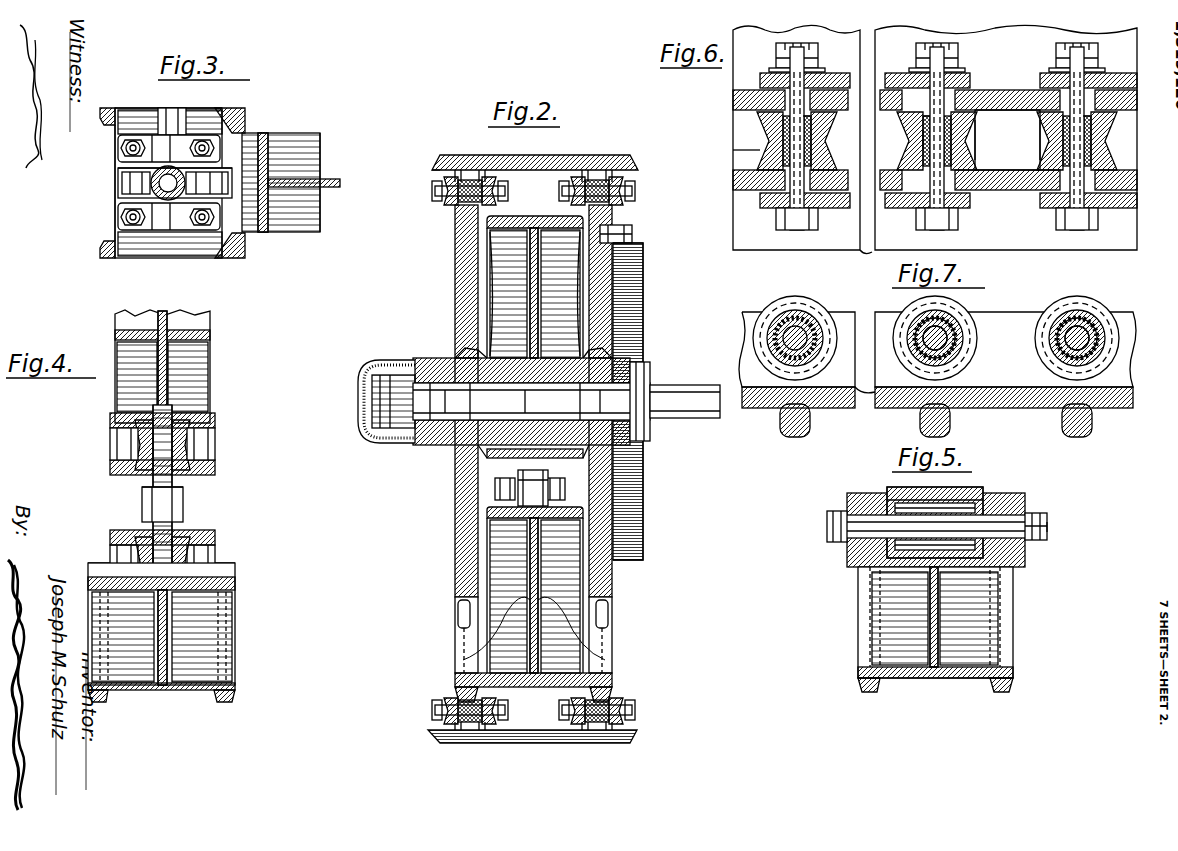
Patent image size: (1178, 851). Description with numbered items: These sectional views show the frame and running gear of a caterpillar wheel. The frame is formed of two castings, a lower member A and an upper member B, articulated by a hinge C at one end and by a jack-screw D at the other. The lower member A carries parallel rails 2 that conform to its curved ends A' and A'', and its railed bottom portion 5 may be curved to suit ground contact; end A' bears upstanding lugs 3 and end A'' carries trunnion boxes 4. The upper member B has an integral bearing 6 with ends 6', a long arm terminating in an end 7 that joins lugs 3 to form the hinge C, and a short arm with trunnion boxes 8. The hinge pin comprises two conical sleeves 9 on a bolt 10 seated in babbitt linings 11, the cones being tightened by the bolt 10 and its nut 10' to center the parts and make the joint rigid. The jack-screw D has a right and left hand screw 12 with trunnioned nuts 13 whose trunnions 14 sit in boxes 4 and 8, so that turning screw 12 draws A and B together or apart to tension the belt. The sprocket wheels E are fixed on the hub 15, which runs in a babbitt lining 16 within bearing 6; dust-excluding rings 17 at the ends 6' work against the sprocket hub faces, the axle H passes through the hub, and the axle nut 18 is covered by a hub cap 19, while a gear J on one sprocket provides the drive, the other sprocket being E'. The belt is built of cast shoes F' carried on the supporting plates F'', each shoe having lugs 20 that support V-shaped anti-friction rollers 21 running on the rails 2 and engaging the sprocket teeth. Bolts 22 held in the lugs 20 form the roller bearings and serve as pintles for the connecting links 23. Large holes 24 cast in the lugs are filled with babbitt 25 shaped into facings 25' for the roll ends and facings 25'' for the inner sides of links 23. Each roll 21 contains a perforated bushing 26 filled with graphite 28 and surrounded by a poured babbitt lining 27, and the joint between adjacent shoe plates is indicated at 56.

In FIG. 3, the parallel rails 2 is at (102, 116).
In FIG. 4, the parallel rails 2 is at (100, 702).
In FIG. 2, the parallel rails 2 is at (455, 684).
In FIG. 5, the parallel rails 2 is at (872, 692).
In FIG. 5, the upstanding ears or lugs 3 is at (866, 494).
In FIG. 4, the trunnion boxes 4 is at (112, 538).
In FIG. 4, the bottom or railed portion 5 is at (180, 690).
In FIG. 2, the bottom or railed portion 5 is at (545, 687).
In FIG. 5, the bottom or railed portion 5 is at (952, 678).
In FIG. 4, the integral bearing 6 is at (161, 438).
In FIG. 2, the integral bearing 6 is at (521, 386).
In FIG. 2, the bearing ends 6' is at (540, 340).
In FIG. 5, the end of long arm 7 is at (906, 498).
In FIG. 3, the trunnion boxes 8 is at (214, 160).
In FIG. 5, the conical sleeves 9 is at (836, 511).
In FIG. 5, the bolt 10 is at (914, 526).
In FIG. 5, the nut 10' is at (1062, 532).
In FIG. 5, the cast metal linings 11 is at (956, 500).
In FIG. 3, the right and left hand screw 12 is at (150, 181).
In FIG. 4, the right and left hand screw 12 is at (184, 508).
In FIG. 4, the trunnioned nuts or sleeves 13 is at (172, 418).
In FIG. 3, the trunnions 14 is at (172, 133).
In FIG. 4, the trunnions 14 is at (112, 450).
In FIG. 2, the hub 15 is at (518, 350).
In FIG. 2, the cast metal lining 16 is at (540, 345).
In FIG. 2, the dust-excluding rings 17 is at (460, 448).
In FIG. 2, the axle nut 18 is at (395, 375).
In FIG. 2, the hub cap 19 is at (370, 370).
In FIG. 2, the integral lugs 20 is at (458, 172).
In FIG. 6, the integral lugs 20 is at (733, 93).
In FIG. 7, the integral lugs 20 is at (937, 404).
In FIG. 2, the anti-friction rollers 21 is at (432, 705).
In FIG. 6, the anti-friction rollers 21 is at (757, 120).
In FIG. 2, the bolts 22 is at (570, 190).
In FIG. 6, the bolts 22 is at (770, 150).
In FIG. 7, the bolts 22 is at (1070, 325).
In FIG. 2, the connecting links 23 is at (446, 204).
In FIG. 6, the connecting links 23 is at (842, 74).
In FIG. 7, the connecting links 23 is at (860, 328).
In FIG. 6, the large holes 24 is at (990, 100).
In FIG. 6, the babbitt 25 is at (961, 139).
In FIG. 6, the facings 25' is at (921, 178).
In FIG. 6, the facings 25'' is at (1041, 138).
In FIG. 6, the bushing or sleeve 26 is at (923, 138).
In FIG. 7, the bushing or sleeve 26 is at (912, 344).
In FIG. 6, the babbitt lining 27 is at (1010, 128).
In FIG. 7, the babbitt lining 27 is at (1058, 330).
In FIG. 6, the graphite 28 is at (1010, 141).
In FIG. 7, the graphite 28 is at (965, 332).
In FIG. 6, the plate joint 56 is at (872, 250).
In FIG. 7, the plate joint 56 is at (876, 408).
In FIG. 3, the lower frame member A is at (281, 170).
In FIG. 2, the lower frame member A is at (533, 590).
In FIG. 4, the frame end A' is at (174, 553).
In FIG. 5, the frame end A' is at (920, 622).
In FIG. 3, the frame end A'' is at (150, 160).
In FIG. 4, the frame end A'' is at (178, 624).
In FIG. 4, the upper frame member B is at (210, 380).
In FIG. 2, the upper frame member B is at (535, 287).
In FIG. 5, the hinge C is at (941, 510).
In FIG. 3, the jack-screw D is at (175, 184).
In FIG. 4, the jack-screw D is at (150, 501).
In FIG. 2, the jack-screw D is at (523, 497).
In FIG. 2, the driving gear E is at (451, 401).
In FIG. 2, the hanger arm E' is at (620, 401).
In FIG. 2, the cast metal shoes F' is at (414, 454).
In FIG. 2, the frame plate F'' is at (533, 449).
In FIG. 6, the frame plate F'' is at (935, 148).
In FIG. 7, the frame plate F'' is at (937, 379).
In FIG. 2, the axle H is at (462, 430).
In FIG. 2, the gear J is at (643, 535).